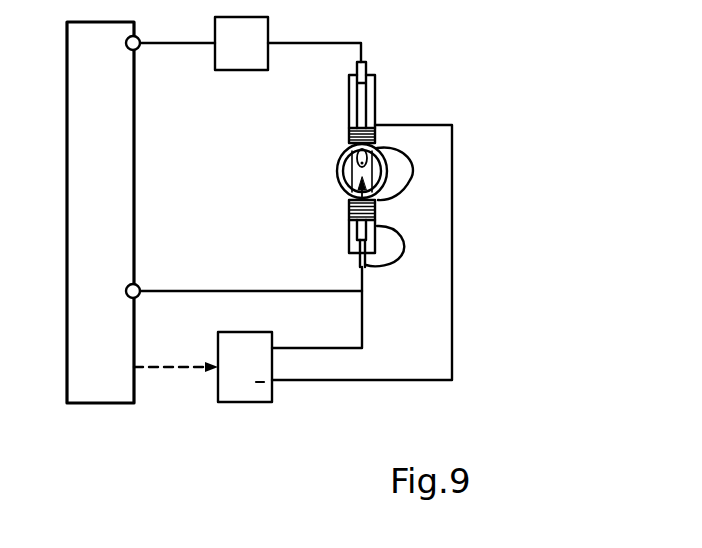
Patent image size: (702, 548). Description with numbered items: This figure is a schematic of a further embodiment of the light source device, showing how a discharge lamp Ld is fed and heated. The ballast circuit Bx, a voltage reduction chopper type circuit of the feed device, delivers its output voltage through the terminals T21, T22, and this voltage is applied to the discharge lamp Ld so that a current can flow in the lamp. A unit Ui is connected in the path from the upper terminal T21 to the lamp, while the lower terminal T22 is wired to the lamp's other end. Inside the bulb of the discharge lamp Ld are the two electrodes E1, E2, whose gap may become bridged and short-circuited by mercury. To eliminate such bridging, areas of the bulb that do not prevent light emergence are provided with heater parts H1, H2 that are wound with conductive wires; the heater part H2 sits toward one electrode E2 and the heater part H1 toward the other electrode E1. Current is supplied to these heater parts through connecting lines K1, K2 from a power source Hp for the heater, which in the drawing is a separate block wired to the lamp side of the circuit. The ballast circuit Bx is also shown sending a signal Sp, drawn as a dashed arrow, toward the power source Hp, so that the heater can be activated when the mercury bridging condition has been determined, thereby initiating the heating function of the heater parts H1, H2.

The ballast circuit Bx is at (105, 403).
The terminal T21 is at (138, 49).
The terminal T22 is at (139, 284).
The ignition voltage unit Ui is at (245, 70).
The control signal Sp is at (163, 367).
The power source for a heater Hp is at (247, 402).
The discharge lamp Ld is at (336, 174).
The heater part H1 is at (349, 213).
The heater part H2 is at (349, 136).
The electrode E1 is at (345, 186).
The electrode E2 is at (348, 160).
The connecting line K1 is at (392, 260).
The connecting line K2 is at (398, 197).